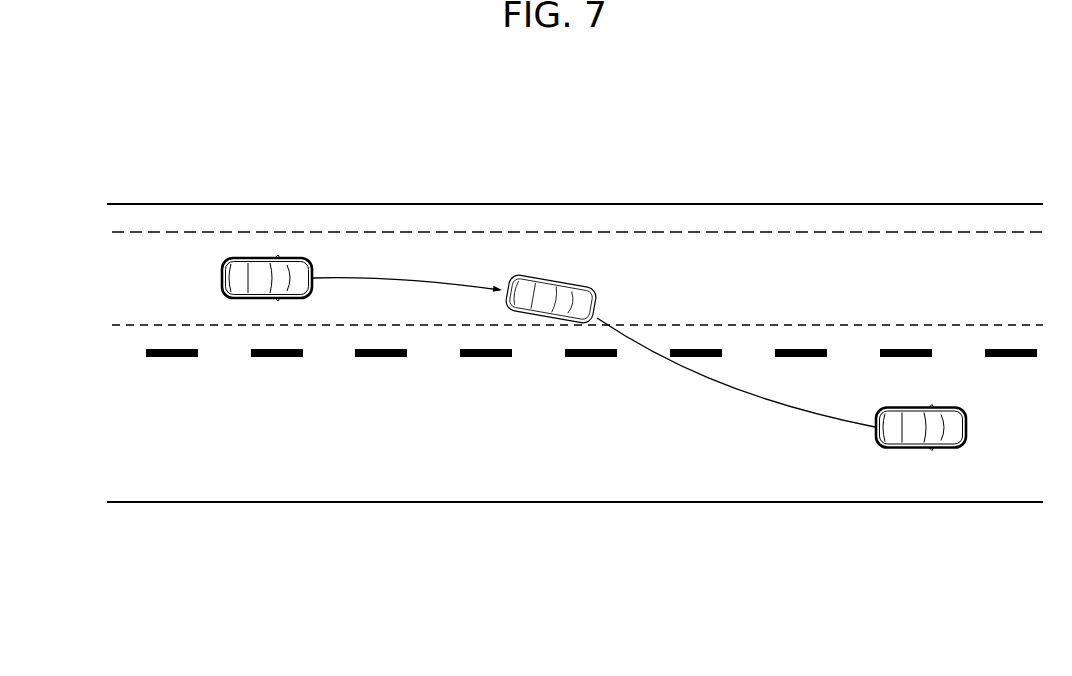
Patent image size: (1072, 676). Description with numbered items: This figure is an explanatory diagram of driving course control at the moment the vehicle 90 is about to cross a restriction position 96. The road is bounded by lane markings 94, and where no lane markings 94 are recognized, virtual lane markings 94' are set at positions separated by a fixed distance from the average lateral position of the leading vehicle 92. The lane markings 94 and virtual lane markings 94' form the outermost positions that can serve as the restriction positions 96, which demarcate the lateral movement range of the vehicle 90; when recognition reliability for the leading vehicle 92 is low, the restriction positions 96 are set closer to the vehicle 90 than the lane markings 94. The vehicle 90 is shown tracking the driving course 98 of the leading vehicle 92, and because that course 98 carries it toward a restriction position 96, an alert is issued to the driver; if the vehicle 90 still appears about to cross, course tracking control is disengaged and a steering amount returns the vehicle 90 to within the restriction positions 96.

The vehicle 90 is at (222, 278).
The leading vehicle 92 is at (969, 427).
The lane markings 94 is at (575, 330).
The virtual lane markings 94' is at (591, 377).
The restriction positions 96 is at (110, 232).
The driving course 98 is at (397, 280).